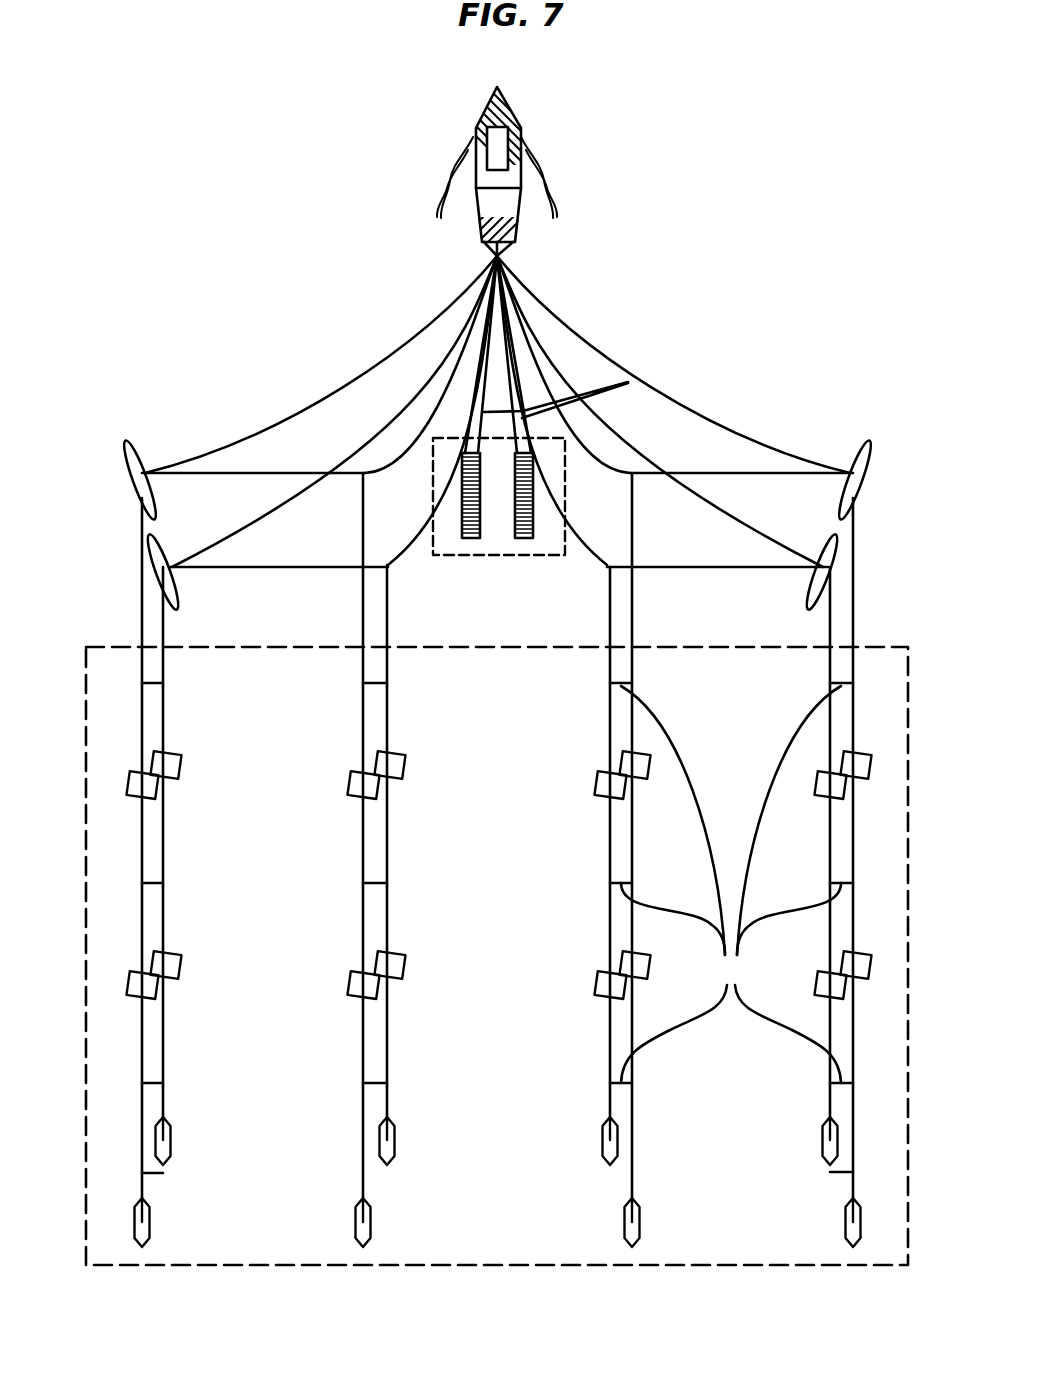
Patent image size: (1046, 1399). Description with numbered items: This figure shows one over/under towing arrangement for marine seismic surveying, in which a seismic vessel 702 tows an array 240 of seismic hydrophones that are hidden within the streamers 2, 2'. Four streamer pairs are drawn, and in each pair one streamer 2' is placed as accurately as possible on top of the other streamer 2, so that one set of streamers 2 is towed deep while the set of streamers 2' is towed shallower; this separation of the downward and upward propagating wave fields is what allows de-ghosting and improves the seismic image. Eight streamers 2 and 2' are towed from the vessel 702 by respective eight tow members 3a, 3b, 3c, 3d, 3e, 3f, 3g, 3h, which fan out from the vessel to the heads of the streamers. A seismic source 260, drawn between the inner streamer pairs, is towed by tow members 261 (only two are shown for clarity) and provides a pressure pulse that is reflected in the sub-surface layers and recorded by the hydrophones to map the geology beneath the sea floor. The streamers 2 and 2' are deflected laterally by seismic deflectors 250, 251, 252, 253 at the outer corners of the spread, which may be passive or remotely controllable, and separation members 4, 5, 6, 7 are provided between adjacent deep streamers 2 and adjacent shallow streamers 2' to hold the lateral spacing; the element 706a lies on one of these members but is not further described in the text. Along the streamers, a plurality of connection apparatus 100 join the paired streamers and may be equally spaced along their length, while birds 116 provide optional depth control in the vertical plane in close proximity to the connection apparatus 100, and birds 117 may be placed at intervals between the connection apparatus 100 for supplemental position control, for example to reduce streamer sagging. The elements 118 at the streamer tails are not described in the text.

The seismic vessel 702 is at (490, 115).
The tow member 3a is at (533, 283).
The tow member 3b is at (532, 323).
The tow member 3c is at (545, 340).
The tow member 3d is at (565, 353).
The tow member 3e is at (466, 284).
The tow member 3f is at (467, 322).
The tow member 3g is at (462, 352).
The tow member 3h is at (445, 368).
The source tow member 261 is at (628, 382).
The seismic deflector 252 is at (133, 445).
The seismic deflector 253 is at (180, 587).
The seismic deflector 250 is at (855, 445).
The seismic deflector 251 is at (815, 587).
The separation member 7 is at (223, 470).
The separation member 6 is at (297, 565).
The separation member 5 is at (777, 473).
The separation member 4 is at (762, 565).
The cross bar section 706a is at (683, 475).
The seismic source 260 is at (508, 556).
The bird 116 is at (350, 775).
The bird 117 is at (607, 977).
The tip element 118 is at (386, 1135).
The streamer 2 is at (497, 837).
The streamer 2' is at (496, 847).
The connection apparatus 100 is at (731, 884).
The array 240 is at (508, 1263).